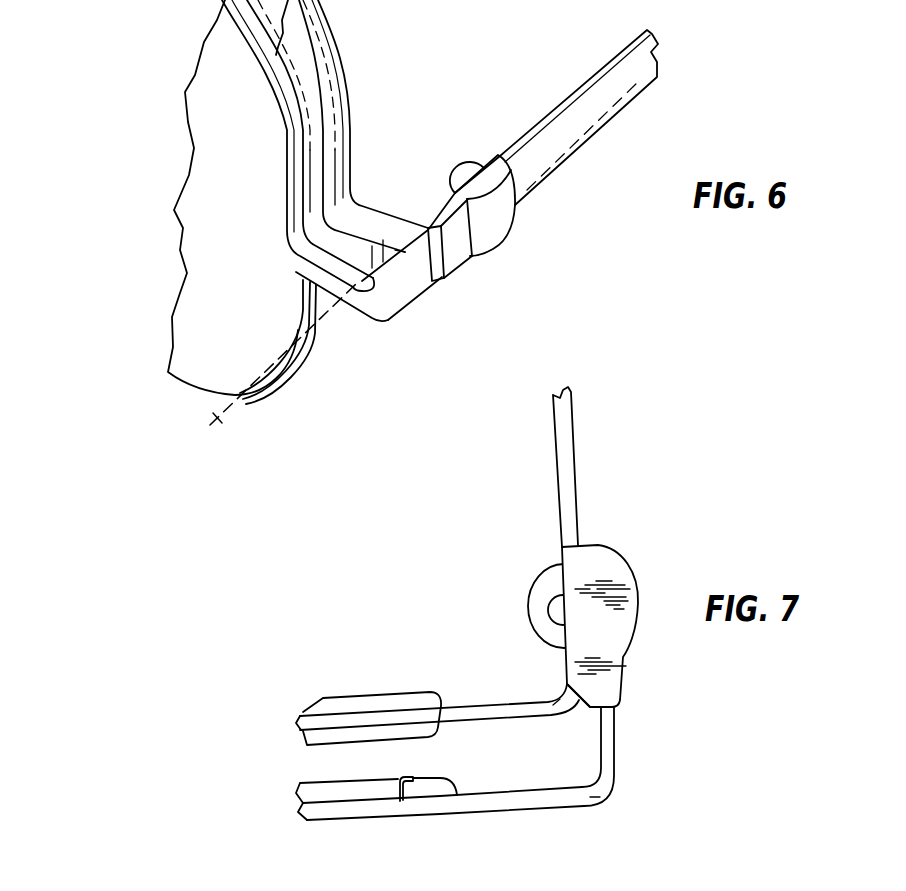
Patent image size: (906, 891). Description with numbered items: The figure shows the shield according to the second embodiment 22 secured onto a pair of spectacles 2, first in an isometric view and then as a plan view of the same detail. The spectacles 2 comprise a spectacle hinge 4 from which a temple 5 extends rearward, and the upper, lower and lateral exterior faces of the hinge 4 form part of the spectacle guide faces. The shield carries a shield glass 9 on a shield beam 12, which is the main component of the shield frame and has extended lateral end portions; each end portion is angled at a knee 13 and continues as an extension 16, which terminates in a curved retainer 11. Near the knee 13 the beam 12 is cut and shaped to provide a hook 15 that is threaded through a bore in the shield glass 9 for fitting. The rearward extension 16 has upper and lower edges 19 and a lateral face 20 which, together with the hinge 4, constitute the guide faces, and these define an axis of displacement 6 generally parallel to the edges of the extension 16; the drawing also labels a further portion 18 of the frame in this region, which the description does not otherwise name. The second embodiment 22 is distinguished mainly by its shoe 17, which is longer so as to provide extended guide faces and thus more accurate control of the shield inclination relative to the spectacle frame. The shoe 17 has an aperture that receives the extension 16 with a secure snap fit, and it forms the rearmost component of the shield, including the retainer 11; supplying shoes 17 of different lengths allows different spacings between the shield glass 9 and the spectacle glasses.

In FIG. 7, the spectacles 2 is at (336, 667).
In FIG. 6, the spectacle hinge 4 is at (473, 153).
In FIG. 7, the spectacle hinge 4 is at (536, 579).
In FIG. 6, the temple 5 is at (580, 90).
In FIG. 7, the temple 5 is at (565, 467).
In FIG. 6, the axis of displacement 6 is at (218, 418).
In FIG. 6, the shield glass 9 is at (185, 233).
In FIG. 6, the retainer 11 is at (512, 242).
In FIG. 7, the retainer 11 is at (622, 562).
In FIG. 6, the shield beam 12 is at (352, 294).
In FIG. 7, the shield beam 12 is at (467, 812).
In FIG. 6, the knee 13 is at (375, 323).
In FIG. 7, the knee 13 is at (608, 792).
In FIG. 7, the hook 15 is at (407, 776).
In FIG. 6, the extension 16 is at (412, 287).
In FIG. 7, the extension 16 is at (617, 722).
In FIG. 6, the shoe 17 is at (458, 257).
In FIG. 7, the shoe 17 is at (617, 652).
In FIG. 6, the upper cable 18 is at (373, 198).
In FIG. 7, the upper cable 18 is at (485, 704).
In FIG. 6, the upper and lower edges of the rearward extension 19 is at (407, 228).
In FIG. 7, the upper and lower edges of the rearward extension 19 is at (555, 698).
In FIG. 7, the lateral face of the rearward extension 20 is at (580, 730).
In FIG. 6, the shield according to the second embodiment 22 is at (128, 66).
In FIG. 7, the shield according to the second embodiment 22 is at (278, 781).